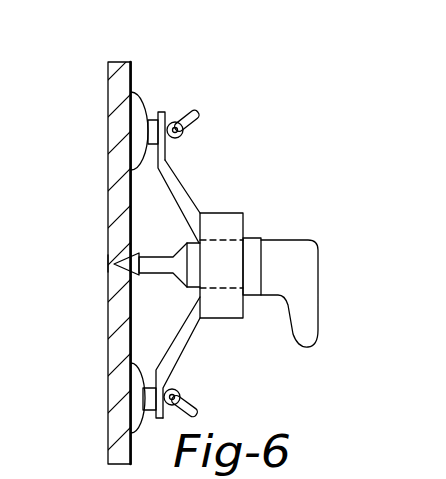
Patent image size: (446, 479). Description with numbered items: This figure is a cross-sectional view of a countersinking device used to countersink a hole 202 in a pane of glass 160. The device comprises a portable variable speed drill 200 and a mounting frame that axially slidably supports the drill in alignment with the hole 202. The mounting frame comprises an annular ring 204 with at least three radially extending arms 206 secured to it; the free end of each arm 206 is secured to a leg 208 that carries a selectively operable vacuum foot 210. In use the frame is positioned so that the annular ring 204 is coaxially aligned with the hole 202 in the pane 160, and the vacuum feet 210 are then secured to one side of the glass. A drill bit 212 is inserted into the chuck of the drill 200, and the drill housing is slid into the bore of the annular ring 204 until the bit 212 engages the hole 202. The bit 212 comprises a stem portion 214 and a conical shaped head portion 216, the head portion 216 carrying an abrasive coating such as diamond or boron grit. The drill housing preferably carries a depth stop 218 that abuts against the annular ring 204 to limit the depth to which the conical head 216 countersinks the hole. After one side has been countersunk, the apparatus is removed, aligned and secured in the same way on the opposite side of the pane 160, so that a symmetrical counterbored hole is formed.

The pane of glass 160 is at (108, 86).
The drill 200 is at (272, 240).
The hole 202 is at (112, 263).
The annular ring 204 is at (218, 213).
The radially extending arm 206 is at (187, 178).
The leg 208 is at (163, 112).
The vacuum foot 210 is at (147, 100).
The drill bit 212 is at (156, 274).
The stem portion 214 is at (147, 257).
The conical shaped head portion 216 is at (118, 290).
The depth stop 218 is at (255, 238).